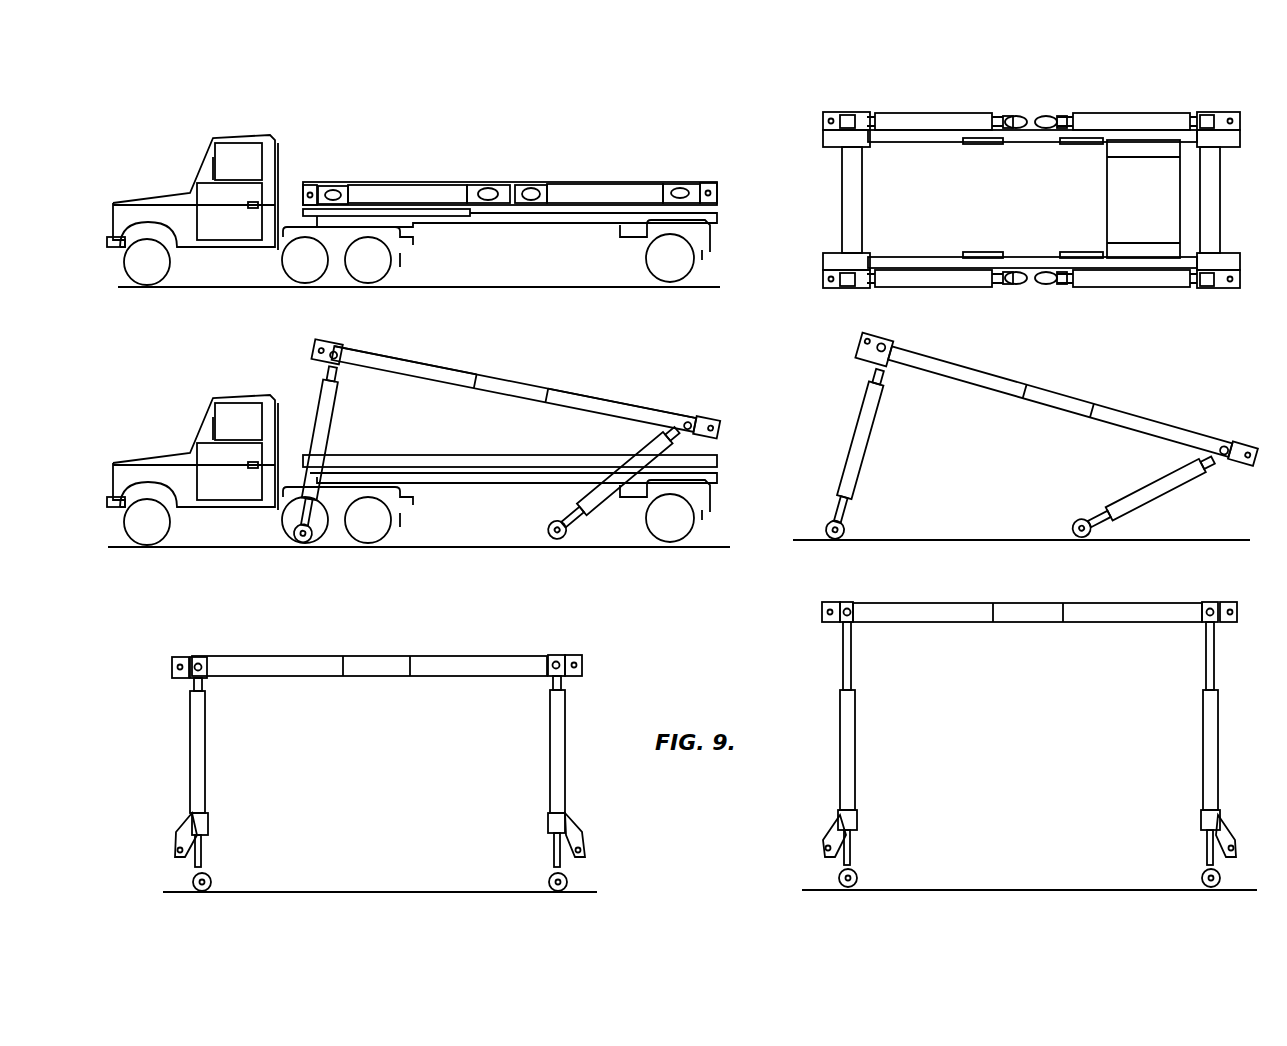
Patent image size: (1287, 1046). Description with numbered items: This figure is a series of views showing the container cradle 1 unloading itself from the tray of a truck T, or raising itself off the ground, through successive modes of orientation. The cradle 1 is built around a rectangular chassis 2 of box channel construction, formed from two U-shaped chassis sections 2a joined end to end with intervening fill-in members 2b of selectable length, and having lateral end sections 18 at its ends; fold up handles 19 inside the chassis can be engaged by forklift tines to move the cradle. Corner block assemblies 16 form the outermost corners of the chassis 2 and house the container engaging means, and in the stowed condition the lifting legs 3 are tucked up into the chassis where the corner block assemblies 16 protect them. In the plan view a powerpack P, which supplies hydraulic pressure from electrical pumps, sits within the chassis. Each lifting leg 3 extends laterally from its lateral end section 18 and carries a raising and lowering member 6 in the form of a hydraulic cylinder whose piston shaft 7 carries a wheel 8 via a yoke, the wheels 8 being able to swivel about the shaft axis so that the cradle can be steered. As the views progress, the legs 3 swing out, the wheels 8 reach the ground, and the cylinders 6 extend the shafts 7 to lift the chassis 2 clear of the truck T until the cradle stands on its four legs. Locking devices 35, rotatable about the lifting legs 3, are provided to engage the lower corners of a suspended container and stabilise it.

The cradle 1 is at (379, 166).
The chassis 2 is at (437, 180).
The U-shaped chassis section 2a is at (440, 380).
The fill-in member 2b is at (508, 390).
The lifting leg 3 is at (408, 190).
The raising and lowering member 6 is at (195, 738).
The piston shaft 7 is at (205, 852).
The wheel 8 is at (487, 185).
The corner block assembly 16 is at (704, 183).
The lateral end section 18 is at (848, 162).
The fold up handle 19 is at (1101, 200).
The locking device 35 is at (580, 845).
The truck T is at (268, 148).
The powerpack P is at (1120, 190).